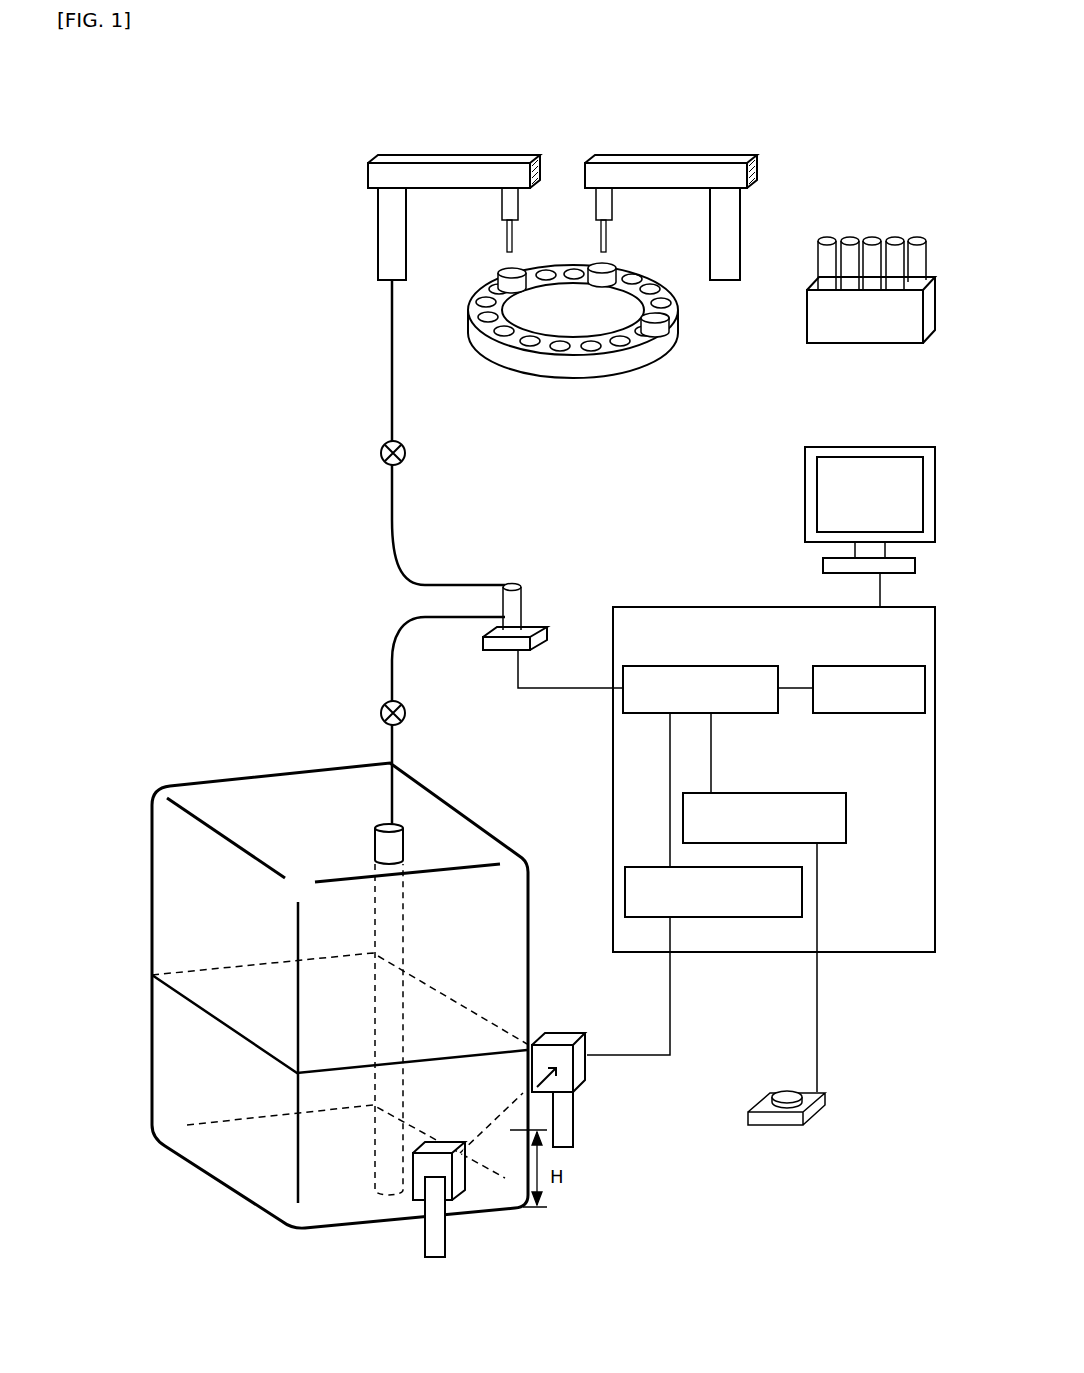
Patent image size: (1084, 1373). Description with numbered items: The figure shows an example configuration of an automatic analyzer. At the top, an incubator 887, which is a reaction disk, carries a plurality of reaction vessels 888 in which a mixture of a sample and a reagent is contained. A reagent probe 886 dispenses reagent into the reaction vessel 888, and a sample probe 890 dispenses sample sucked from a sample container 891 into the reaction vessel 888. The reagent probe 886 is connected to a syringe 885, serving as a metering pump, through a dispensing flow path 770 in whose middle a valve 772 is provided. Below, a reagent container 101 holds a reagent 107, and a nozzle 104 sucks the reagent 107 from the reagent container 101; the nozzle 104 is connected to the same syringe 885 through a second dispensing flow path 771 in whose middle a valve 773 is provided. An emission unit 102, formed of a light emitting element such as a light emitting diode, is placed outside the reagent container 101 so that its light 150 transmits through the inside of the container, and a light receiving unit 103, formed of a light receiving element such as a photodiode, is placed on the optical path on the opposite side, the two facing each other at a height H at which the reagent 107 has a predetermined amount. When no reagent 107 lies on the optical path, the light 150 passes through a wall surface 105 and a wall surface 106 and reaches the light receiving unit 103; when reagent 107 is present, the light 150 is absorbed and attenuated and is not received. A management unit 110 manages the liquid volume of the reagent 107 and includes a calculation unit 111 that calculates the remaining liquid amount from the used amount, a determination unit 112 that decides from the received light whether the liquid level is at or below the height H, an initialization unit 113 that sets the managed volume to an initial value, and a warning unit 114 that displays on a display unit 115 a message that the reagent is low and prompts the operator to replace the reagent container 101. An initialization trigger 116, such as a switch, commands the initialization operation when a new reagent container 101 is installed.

The reagent container 101 is at (340, 987).
The emission unit 102 is at (410, 1193).
The light receiving unit 103 is at (586, 1080).
The nozzle 104 is at (395, 827).
The wall surface 105 is at (492, 903).
The wall surface 106 is at (525, 857).
The reagent 107 is at (260, 1160).
The management unit 110 is at (726, 809).
The calculation unit 111 is at (755, 666).
The determination unit 112 is at (705, 917).
The initialization unit 113 is at (810, 793).
The warning unit 114 is at (833, 666).
The display unit 115 is at (862, 447).
The initialization trigger 116 is at (778, 1128).
The light 150 is at (523, 1092).
The dispensing flow path 770 is at (388, 338).
The dispensing flow path 771 is at (388, 760).
The valve 772 is at (381, 448).
The valve 773 is at (385, 706).
The syringe 885 is at (540, 632).
The reagent probe 886 is at (380, 158).
The incubator 887 is at (583, 368).
The reaction vessel 888 is at (662, 322).
The sample probe 890 is at (622, 157).
The sample container 891 is at (890, 232).